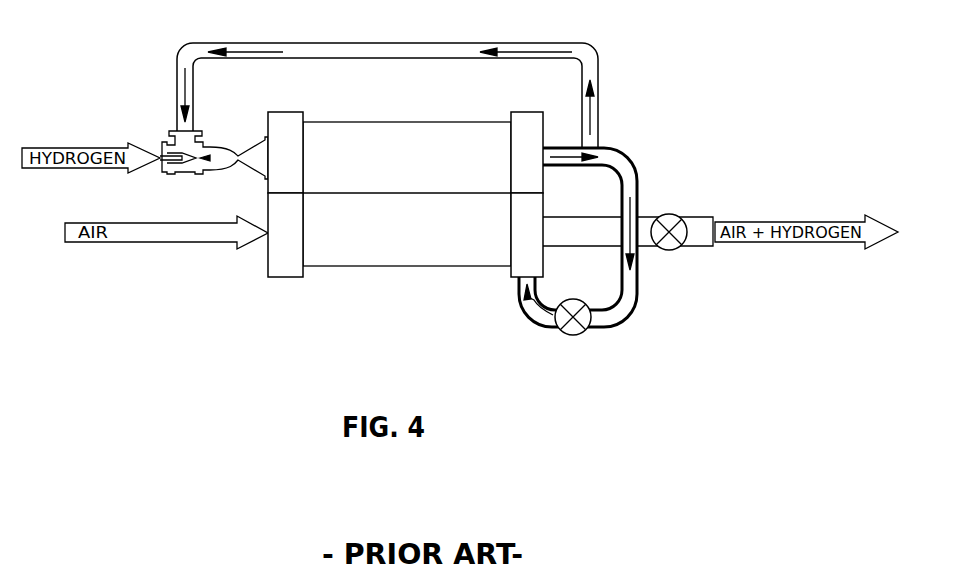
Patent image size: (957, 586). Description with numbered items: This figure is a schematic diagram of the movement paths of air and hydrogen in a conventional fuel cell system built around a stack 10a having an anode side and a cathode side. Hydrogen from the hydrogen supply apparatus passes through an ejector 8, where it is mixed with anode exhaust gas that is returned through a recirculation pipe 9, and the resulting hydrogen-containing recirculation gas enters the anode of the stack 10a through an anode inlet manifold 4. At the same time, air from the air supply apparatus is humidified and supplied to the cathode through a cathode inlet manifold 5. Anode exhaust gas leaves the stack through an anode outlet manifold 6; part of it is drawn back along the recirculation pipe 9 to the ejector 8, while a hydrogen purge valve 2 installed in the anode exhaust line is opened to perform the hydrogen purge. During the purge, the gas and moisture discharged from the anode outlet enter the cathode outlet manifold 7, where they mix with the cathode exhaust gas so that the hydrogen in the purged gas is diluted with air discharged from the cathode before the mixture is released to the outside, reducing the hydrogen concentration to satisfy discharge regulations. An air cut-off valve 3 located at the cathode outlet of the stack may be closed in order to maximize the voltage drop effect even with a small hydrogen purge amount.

The hydrogen purge valve 2 is at (570, 336).
The air cut-off valve 3 is at (668, 251).
The anode inlet manifold 4 is at (285, 112).
The cathode inlet manifold 5 is at (268, 277).
The anode outlet manifold 6 is at (522, 112).
The cathode outlet manifold 7 is at (509, 280).
The ejector 8 is at (200, 144).
The recirculation pipe 9 is at (598, 50).
The stack 10a is at (398, 122).